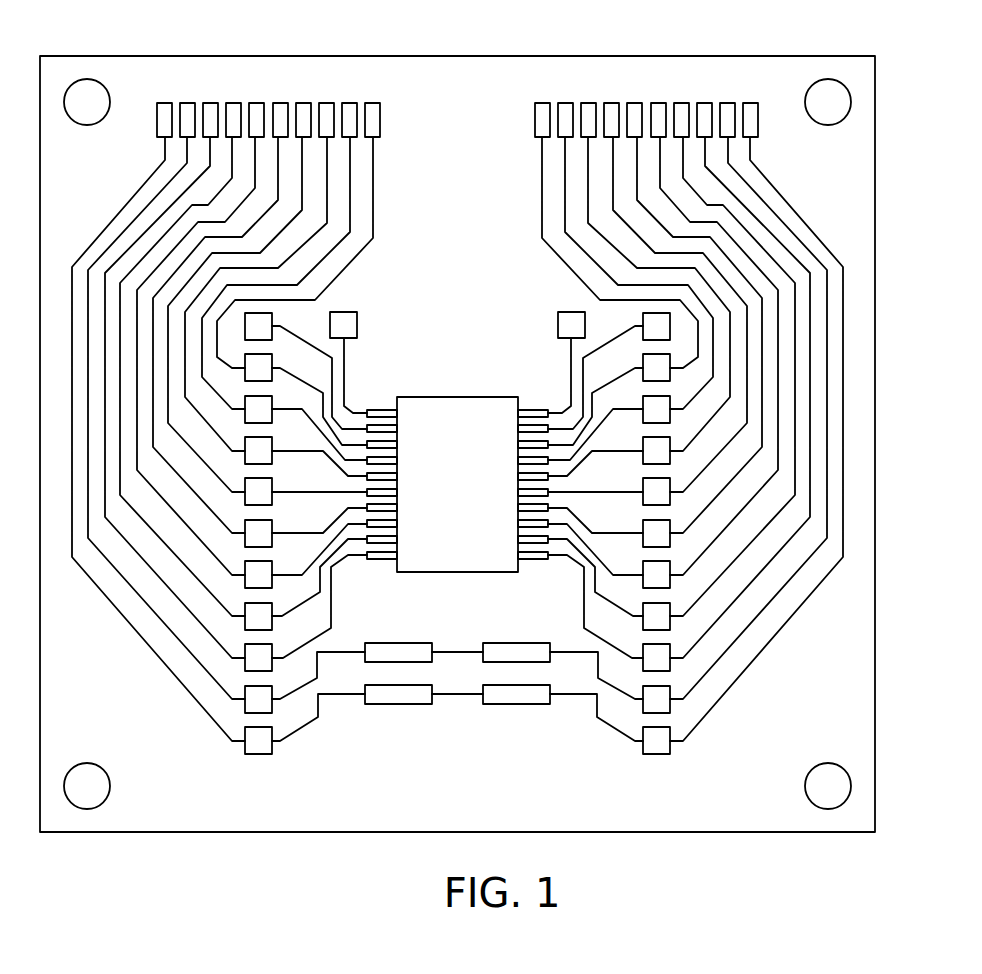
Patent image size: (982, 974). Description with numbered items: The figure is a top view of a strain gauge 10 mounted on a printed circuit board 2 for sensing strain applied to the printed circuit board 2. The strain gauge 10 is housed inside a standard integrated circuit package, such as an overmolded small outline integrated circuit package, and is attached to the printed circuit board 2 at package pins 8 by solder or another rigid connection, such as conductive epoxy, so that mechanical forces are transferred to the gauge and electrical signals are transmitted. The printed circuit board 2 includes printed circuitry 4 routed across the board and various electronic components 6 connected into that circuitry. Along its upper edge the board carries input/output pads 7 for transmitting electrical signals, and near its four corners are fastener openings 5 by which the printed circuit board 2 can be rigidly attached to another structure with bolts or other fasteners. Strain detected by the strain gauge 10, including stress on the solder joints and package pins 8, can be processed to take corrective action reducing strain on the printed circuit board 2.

The printed circuit board 2 is at (623, 55).
The printed circuitry 4 is at (778, 640).
The fastener openings 5 is at (90, 79).
The electronic components 6 is at (432, 703).
The input/output (I/O) pads 7 is at (322, 103).
The package pins 8 is at (385, 407).
The strain gauge 10 is at (462, 386).